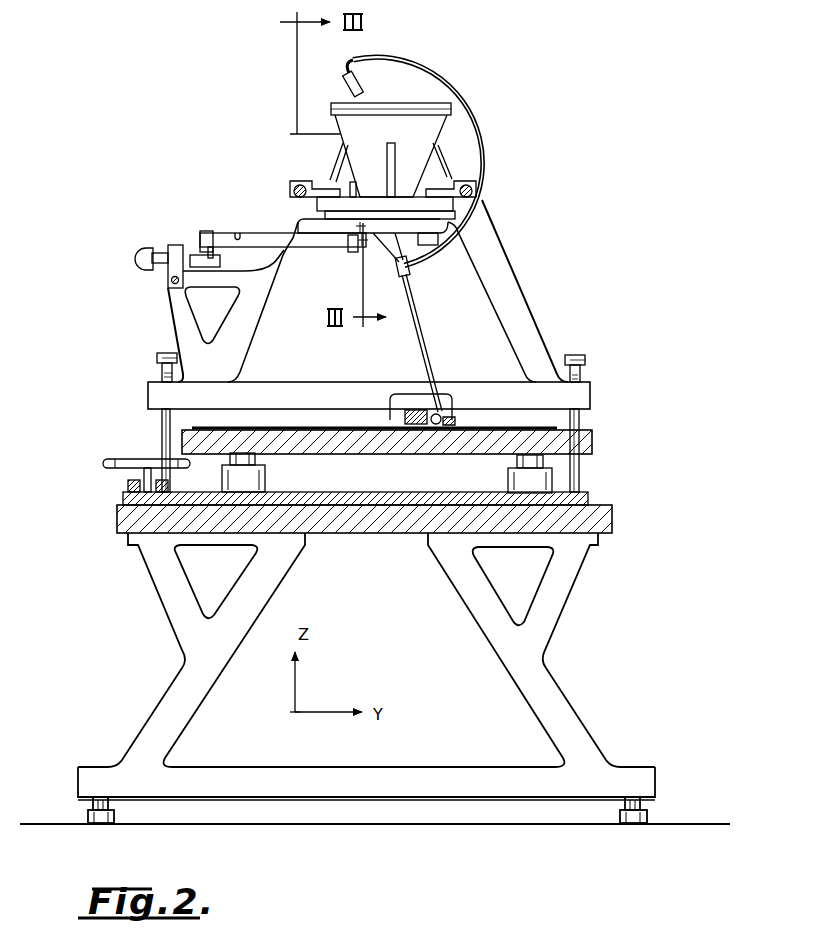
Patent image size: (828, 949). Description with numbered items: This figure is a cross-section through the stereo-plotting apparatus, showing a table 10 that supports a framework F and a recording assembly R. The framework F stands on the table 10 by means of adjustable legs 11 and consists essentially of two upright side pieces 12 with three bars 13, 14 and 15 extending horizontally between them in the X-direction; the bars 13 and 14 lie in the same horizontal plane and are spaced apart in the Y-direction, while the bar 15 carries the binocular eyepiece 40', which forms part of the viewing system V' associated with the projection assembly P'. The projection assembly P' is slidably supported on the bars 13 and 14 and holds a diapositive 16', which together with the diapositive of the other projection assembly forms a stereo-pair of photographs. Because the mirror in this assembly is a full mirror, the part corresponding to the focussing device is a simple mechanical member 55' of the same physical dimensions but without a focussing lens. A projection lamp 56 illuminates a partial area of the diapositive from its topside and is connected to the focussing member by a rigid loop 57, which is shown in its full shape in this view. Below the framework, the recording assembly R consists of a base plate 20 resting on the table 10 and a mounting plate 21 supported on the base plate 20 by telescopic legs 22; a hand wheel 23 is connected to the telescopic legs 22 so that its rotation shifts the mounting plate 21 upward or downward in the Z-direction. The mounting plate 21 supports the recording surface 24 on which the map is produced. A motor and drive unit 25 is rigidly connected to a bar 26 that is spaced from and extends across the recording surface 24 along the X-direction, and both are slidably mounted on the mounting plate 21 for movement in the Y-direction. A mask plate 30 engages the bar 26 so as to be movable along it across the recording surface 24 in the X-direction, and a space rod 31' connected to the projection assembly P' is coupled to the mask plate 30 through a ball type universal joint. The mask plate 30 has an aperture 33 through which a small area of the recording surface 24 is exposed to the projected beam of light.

The table 10 is at (587, 520).
The adjustable legs 11 is at (162, 432).
The upright side pieces 12 is at (520, 300).
The bar 13 is at (298, 185).
The bar 14 is at (476, 170).
The horizontal bar 15 is at (170, 282).
The diapositive 16' is at (391, 124).
The base plate 20 is at (418, 480).
The mounting plate 21 is at (577, 443).
The telescopic legs 22 is at (247, 480).
The hand wheel 23 is at (140, 478).
The recording surface 24 is at (258, 428).
The motor and drive unit 25 is at (418, 400).
The bar 26 is at (414, 384).
The mask plate 30 is at (458, 413).
The space rod 31' is at (430, 343).
The aperture 33 is at (441, 410).
The binocular eyepiece 40' is at (228, 244).
The mechanical member 55' is at (389, 269).
The projection lamp 56 is at (347, 80).
The rigid loop 57 is at (478, 141).
The framework F is at (345, 291).
The projection assembly P' is at (412, 233).
The recording assembly R is at (603, 478).
The viewing system V' is at (228, 190).